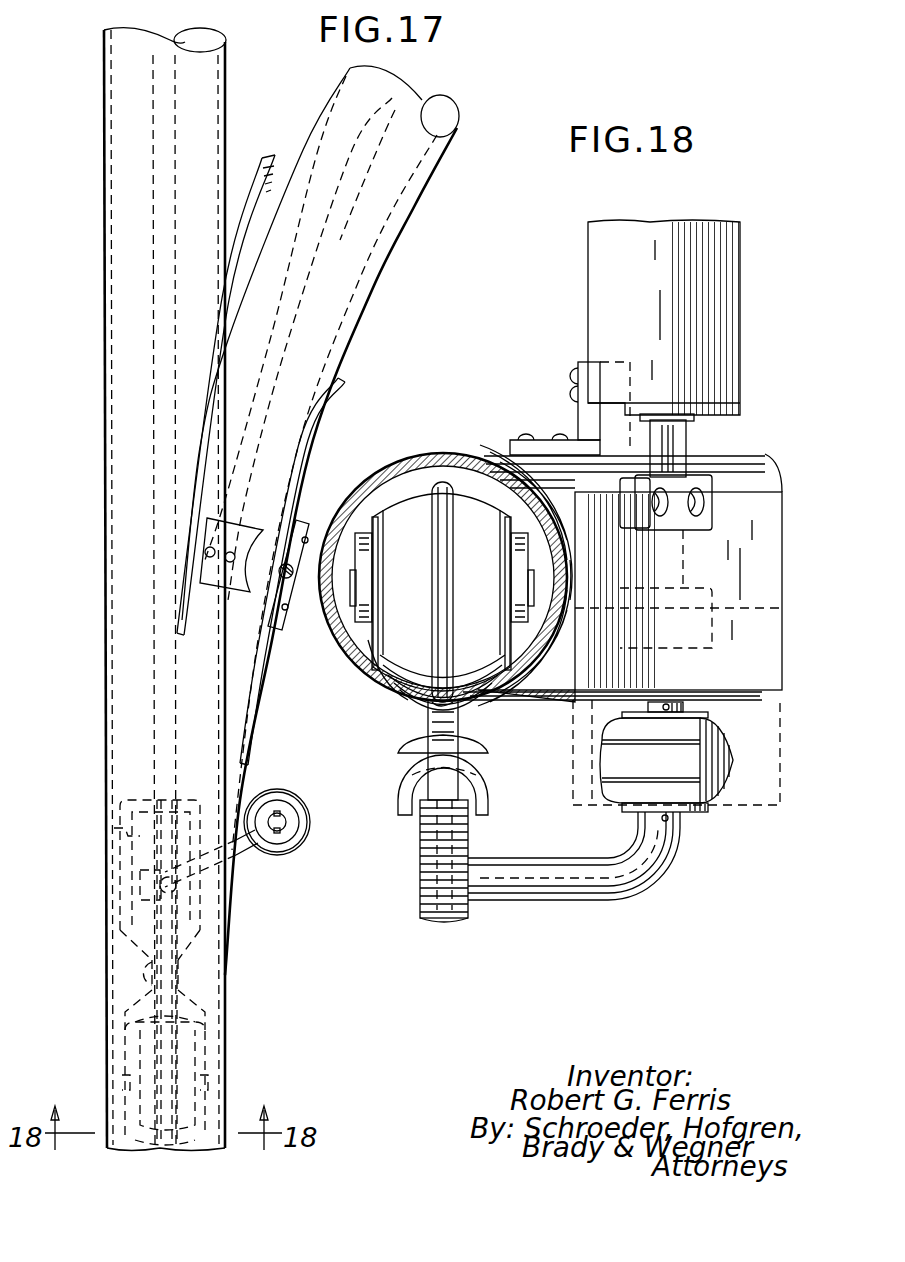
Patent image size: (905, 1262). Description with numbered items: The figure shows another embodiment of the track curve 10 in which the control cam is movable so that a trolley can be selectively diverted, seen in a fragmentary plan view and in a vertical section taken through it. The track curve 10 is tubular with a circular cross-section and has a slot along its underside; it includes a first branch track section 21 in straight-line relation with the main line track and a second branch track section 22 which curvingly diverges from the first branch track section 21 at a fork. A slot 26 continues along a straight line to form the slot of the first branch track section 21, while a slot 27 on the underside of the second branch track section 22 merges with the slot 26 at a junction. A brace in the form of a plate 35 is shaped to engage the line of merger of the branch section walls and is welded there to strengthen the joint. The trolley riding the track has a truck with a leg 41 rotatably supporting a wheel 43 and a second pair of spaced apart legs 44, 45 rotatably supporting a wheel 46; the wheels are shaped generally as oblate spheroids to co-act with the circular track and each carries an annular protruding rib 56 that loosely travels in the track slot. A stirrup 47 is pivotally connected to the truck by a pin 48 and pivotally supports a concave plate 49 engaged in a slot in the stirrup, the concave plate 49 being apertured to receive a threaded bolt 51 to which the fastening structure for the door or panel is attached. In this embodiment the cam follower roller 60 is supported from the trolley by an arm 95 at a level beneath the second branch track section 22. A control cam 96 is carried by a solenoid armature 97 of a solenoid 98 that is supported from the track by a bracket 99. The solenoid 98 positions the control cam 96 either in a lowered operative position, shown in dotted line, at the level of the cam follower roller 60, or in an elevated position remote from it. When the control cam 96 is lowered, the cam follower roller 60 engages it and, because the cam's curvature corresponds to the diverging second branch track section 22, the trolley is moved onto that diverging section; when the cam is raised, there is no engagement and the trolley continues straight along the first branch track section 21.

In FIG. 17, the track curve 10 is at (100, 687).
In FIG. 17, the first branch track section 21 is at (105, 321).
In FIG. 18, the first branch track section 21 is at (382, 486).
In FIG. 17, the second branch track section 22 is at (358, 288).
In FIG. 18, the second branch track section 22 is at (566, 698).
In FIG. 17, the slot 26 is at (158, 248).
In FIG. 18, the slot 26 is at (424, 706).
In FIG. 17, the slot 27 is at (365, 195).
In FIG. 17, the plate 35 is at (268, 155).
In FIG. 17, the leg 41 is at (120, 887).
In FIG. 17, the wheel 43 is at (130, 812).
In FIG. 17, the leg 44 is at (140, 1052).
In FIG. 18, the leg 44 is at (362, 625).
In FIG. 17, the leg 45 is at (200, 1046).
In FIG. 18, the leg 45 is at (513, 553).
In FIG. 17, the wheel 46 is at (205, 1060).
In FIG. 18, the wheel 46 is at (400, 676).
In FIG. 17, the stirrup 47 is at (160, 944).
In FIG. 18, the stirrup 47 is at (459, 718).
In FIG. 17, the pin 48 is at (140, 970).
In FIG. 18, the concave plate 49 is at (489, 788).
In FIG. 18, the threaded bolt 51 is at (466, 905).
In FIG. 18, the annular protruding rib 56 is at (438, 557).
In FIG. 17, the cam follower roller 60 is at (284, 794).
In FIG. 18, the cam follower roller 60 is at (716, 812).
In FIG. 17, the arm 95 is at (230, 858).
In FIG. 18, the arm 95 is at (612, 901).
In FIG. 17, the control cam 96 is at (323, 424).
In FIG. 18, the control cam 96 is at (770, 806).
In FIG. 17, the solenoid armature 97 is at (290, 582).
In FIG. 18, the solenoid armature 97 is at (672, 434).
In FIG. 18, the solenoid 98 is at (600, 267).
In FIG. 17, the bracket 99 is at (248, 532).
In FIG. 18, the bracket 99 is at (578, 398).